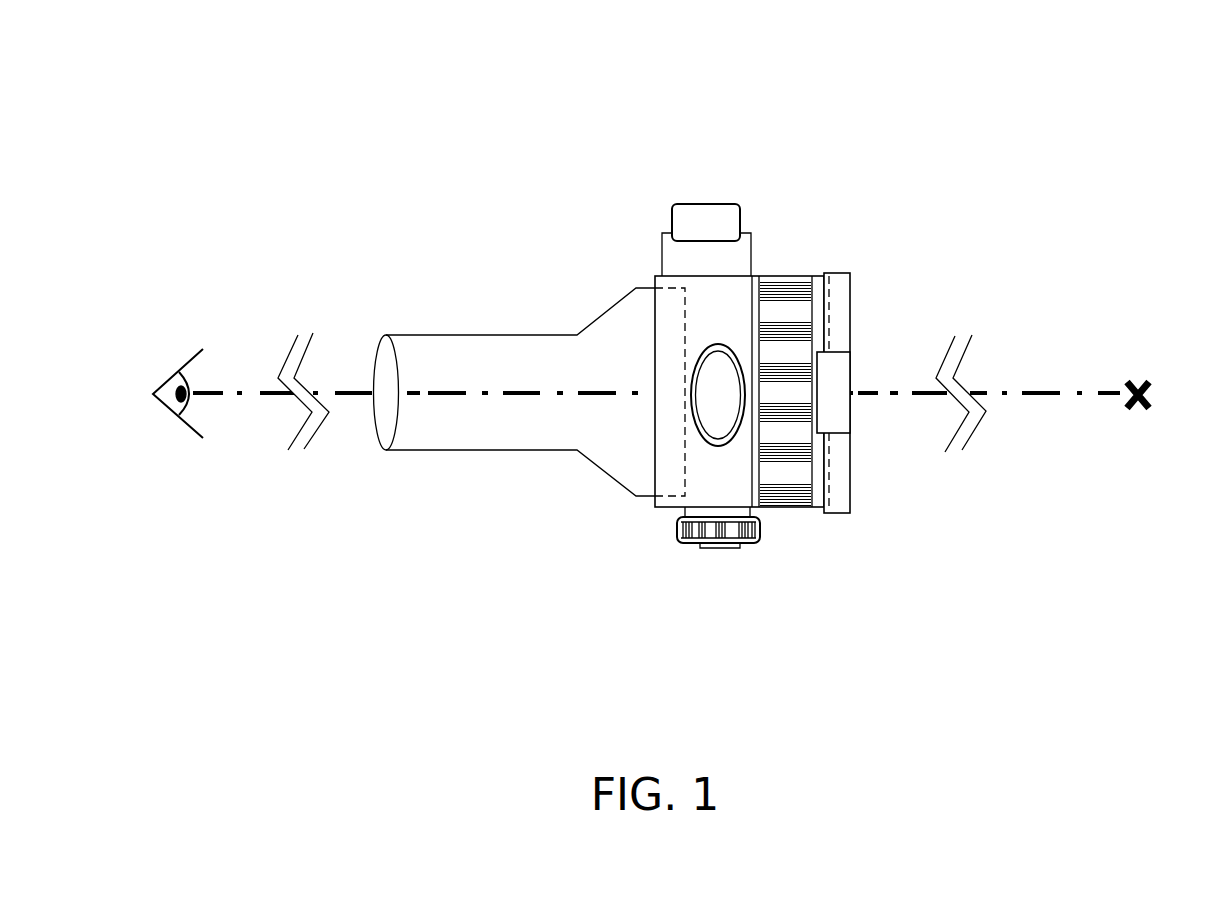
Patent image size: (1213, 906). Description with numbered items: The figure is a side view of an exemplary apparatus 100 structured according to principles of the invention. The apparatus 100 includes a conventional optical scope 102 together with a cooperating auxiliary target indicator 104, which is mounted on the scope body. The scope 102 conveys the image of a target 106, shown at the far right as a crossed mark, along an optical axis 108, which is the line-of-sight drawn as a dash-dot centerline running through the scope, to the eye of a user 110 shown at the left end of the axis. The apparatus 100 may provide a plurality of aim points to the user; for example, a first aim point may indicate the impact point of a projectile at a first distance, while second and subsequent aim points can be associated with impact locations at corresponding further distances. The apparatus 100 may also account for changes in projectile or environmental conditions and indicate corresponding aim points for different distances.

The apparatus 100 is at (1036, 104).
The optical scope 102 is at (428, 350).
The auxiliary target indicator 104 is at (917, 229).
The target 106 is at (1135, 432).
The optical axis 108 is at (1052, 392).
The eye of a user 110 is at (194, 344).